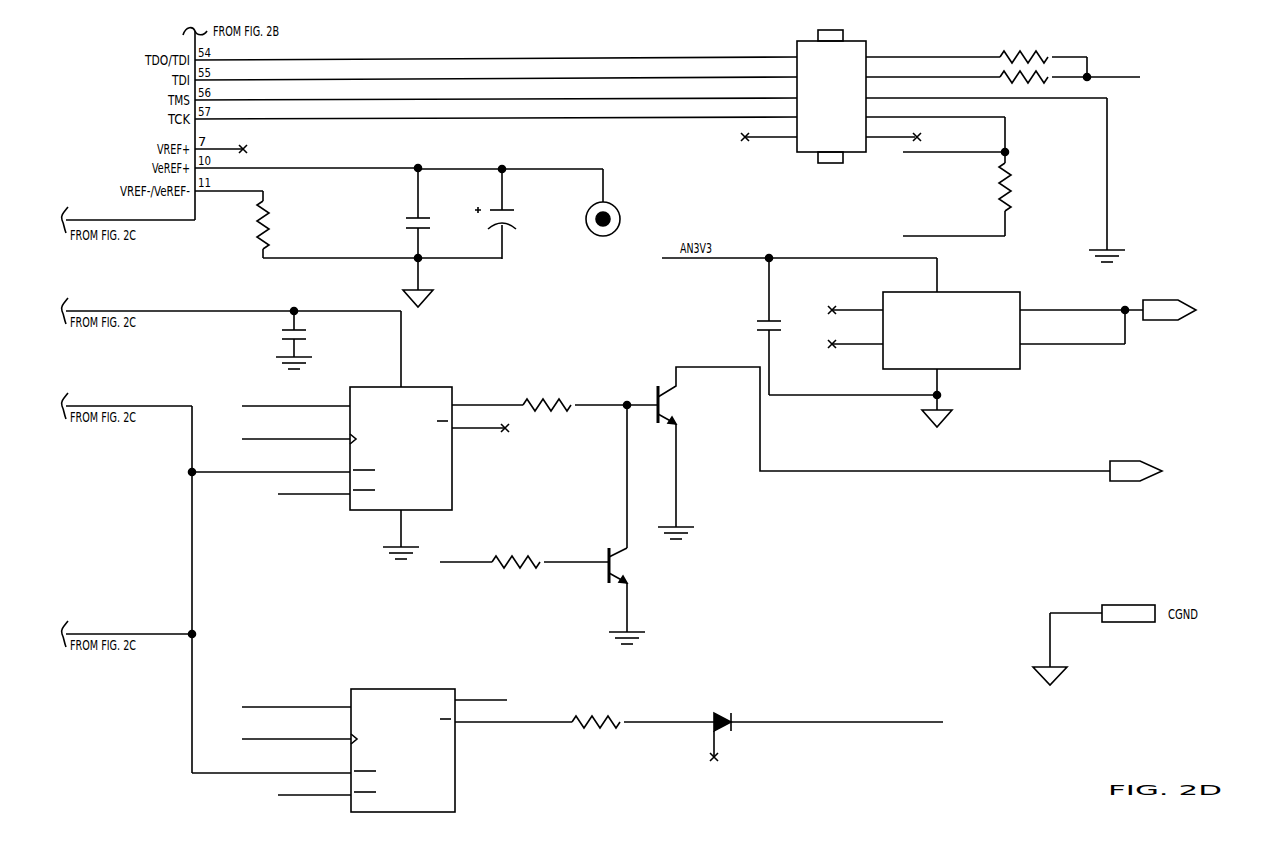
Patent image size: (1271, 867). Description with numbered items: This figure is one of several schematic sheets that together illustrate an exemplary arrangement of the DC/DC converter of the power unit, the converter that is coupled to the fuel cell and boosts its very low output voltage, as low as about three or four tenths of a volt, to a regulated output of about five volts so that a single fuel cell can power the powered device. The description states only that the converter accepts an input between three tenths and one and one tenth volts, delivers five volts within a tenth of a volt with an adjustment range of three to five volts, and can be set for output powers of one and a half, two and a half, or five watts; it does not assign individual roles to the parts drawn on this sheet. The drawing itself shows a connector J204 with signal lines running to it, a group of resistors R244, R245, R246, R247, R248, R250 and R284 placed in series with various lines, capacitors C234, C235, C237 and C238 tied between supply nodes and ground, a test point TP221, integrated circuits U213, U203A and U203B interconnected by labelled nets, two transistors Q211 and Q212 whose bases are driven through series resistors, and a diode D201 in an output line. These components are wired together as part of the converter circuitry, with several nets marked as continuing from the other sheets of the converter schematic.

The JTAG connector J204 is at (933, 140).
The resistor R244 is at (1003, 56).
The resistor 0R R245 is at (959, 125).
The resistor 100k R246 is at (957, 193).
The resistor R247 is at (325, 224).
The resistor 47K R248 is at (555, 395).
The resistor 1k R250 is at (584, 712).
The resistor 20K R284 is at (524, 560).
The capacitor 10uF/6V3 C234 is at (510, 213).
The capacitor 0.1u C235 is at (402, 229).
The capacitor 0.1u C237 is at (280, 339).
The capacitor 0.1u C238 is at (847, 325).
The test point TP221 is at (603, 212).
The voltage reference MAX6033AAUT30 U213 is at (1037, 342).
The flip-flop MC74LCX74DT U203A is at (350, 435).
The flip-flop MC74LCX74DT U203B is at (349, 709).
The transistor MMBT2222LT1 Q211 is at (938, 453).
The transistor MMBT2222LT1 Q212 is at (658, 524).
The diode MBD301LT1 D201 is at (814, 733).